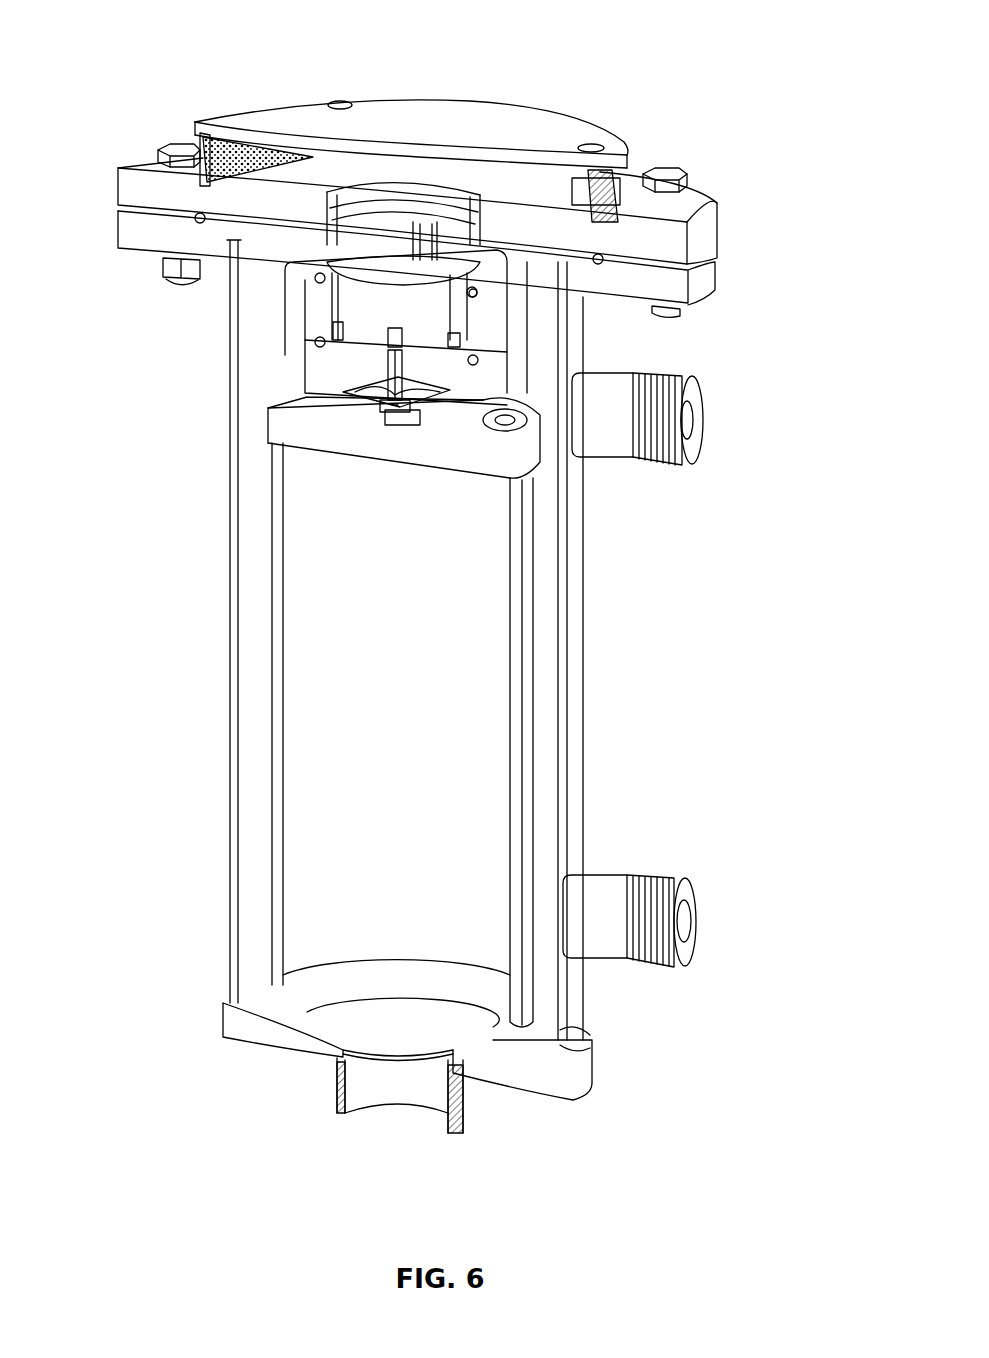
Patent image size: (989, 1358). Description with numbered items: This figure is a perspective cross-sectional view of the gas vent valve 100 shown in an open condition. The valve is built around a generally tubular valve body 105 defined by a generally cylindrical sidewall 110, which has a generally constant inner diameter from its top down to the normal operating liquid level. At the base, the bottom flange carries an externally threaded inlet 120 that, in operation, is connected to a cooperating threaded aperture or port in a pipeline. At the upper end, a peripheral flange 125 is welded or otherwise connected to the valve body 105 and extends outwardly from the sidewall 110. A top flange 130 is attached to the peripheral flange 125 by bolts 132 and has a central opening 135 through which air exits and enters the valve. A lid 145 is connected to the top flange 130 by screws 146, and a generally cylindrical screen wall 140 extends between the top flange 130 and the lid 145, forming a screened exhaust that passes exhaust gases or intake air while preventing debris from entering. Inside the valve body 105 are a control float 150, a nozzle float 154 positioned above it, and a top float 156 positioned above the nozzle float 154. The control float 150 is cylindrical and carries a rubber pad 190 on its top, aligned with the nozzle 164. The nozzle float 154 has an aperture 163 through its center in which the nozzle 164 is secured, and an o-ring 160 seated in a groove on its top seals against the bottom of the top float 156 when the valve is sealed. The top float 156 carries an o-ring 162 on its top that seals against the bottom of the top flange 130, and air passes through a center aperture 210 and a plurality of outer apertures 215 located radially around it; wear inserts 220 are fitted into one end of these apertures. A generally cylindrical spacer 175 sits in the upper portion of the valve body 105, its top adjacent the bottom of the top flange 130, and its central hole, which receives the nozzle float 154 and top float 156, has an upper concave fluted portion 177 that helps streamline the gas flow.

The gas vent valve 100 is at (176, 40).
The valve body 105 is at (200, 844).
The sidewall 110 is at (232, 668).
The inlet 120 is at (418, 1085).
The peripheral flange 125 is at (118, 234).
The top flange 130 is at (710, 226).
The bolts 132 is at (178, 148).
The central opening 135 is at (381, 194).
The screen wall 140 is at (615, 186).
The lid 145 is at (551, 117).
The screws 146 is at (340, 102).
The control float 150 is at (515, 672).
The nozzle float 154 is at (305, 363).
The top float 156 is at (300, 342).
The o-ring 160 is at (475, 365).
The o-ring 162 is at (477, 295).
The aperture 163 is at (396, 412).
The nozzle 164 is at (392, 410).
The spacer 175 is at (248, 313).
The upper concave fluted portion 177 is at (302, 240).
The rubber pad 190 is at (400, 418).
The center aperture 210 is at (396, 290).
The outer apertures 215 is at (338, 290).
The wear inserts 220 is at (345, 330).